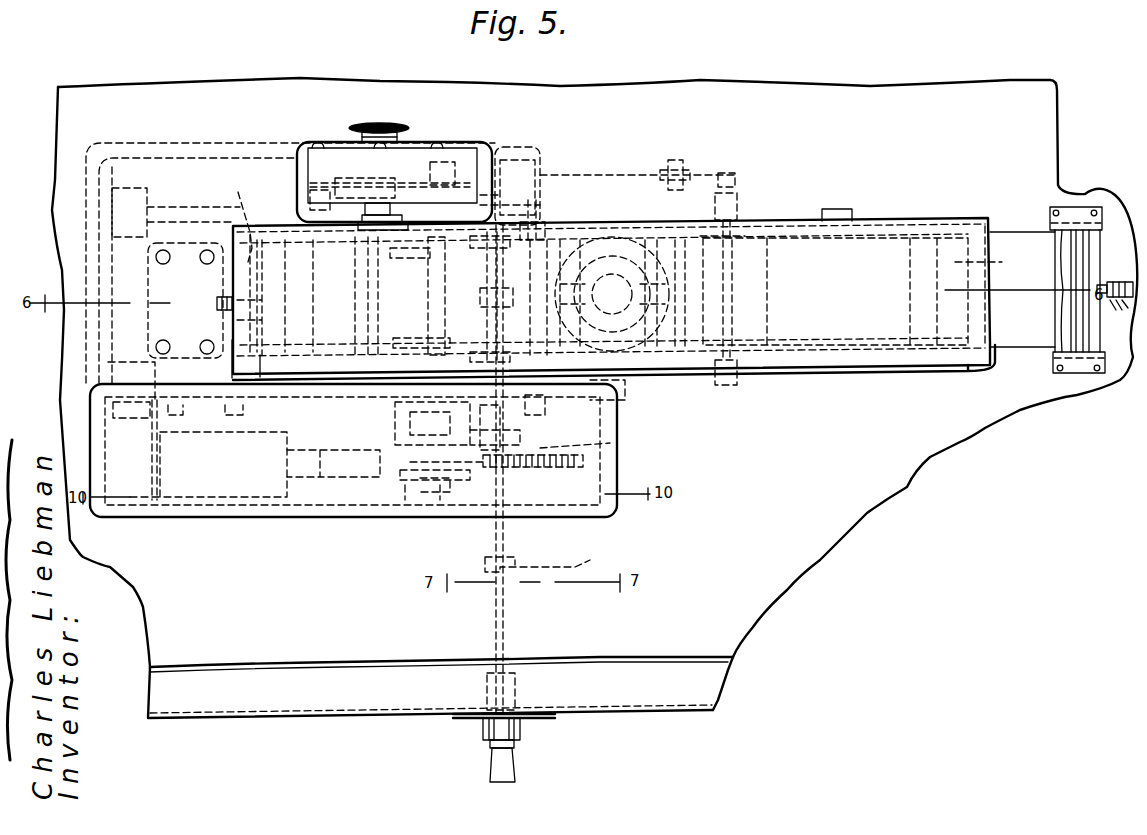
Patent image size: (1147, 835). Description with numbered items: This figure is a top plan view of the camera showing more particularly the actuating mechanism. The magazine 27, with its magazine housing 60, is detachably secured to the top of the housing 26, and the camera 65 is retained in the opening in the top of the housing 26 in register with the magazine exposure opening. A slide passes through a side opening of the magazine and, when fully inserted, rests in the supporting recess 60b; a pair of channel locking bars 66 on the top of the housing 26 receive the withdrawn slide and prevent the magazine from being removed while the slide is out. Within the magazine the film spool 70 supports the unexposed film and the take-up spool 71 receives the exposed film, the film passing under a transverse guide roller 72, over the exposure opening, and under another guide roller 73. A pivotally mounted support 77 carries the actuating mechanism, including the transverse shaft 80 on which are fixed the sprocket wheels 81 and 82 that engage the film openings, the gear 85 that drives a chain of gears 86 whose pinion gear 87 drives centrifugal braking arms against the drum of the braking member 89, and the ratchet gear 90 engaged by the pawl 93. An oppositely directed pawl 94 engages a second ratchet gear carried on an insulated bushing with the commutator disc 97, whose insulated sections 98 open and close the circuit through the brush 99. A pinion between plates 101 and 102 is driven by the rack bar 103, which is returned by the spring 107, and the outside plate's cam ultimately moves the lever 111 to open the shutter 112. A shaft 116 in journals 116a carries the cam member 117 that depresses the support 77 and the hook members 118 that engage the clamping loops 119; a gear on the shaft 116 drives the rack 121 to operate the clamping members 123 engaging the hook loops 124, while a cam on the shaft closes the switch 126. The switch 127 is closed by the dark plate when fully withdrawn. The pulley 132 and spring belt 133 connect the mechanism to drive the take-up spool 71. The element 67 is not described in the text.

The housing 26 is at (885, 78).
The magazine 27 is at (912, 213).
The magazine housing 60 is at (990, 224).
The supporting recess 60b is at (216, 300).
The camera 65 is at (640, 226).
The channel locking bars 66 is at (1076, 210).
The guide rod 67 is at (1003, 244).
The film spool 70 is at (795, 240).
The take-up spool 71 is at (238, 205).
The guide roller 72 is at (991, 262).
The guide roller 73 is at (238, 308).
The support 77 is at (192, 205).
The transverse shaft 80 is at (432, 284).
The sprocket wheel 81 is at (408, 258).
The sprocket wheel 82 is at (416, 340).
The gear 85 is at (450, 168).
The chain of gears 86 is at (408, 172).
The pinion gear 87 is at (390, 176).
The braking member 89 is at (312, 186).
The ratchet gear 90 is at (395, 414).
The pawl 93 is at (422, 398).
The pawl 94 is at (502, 434).
The commutator disc 97 is at (392, 440).
The insulated sections 98 is at (502, 426).
The brush 99 is at (402, 474).
The plate 101 is at (412, 490).
The plate 102 is at (418, 508).
The rack bar 103 is at (438, 508).
The spring 107 is at (302, 441).
The lever 111 is at (600, 447).
The shutter 112 is at (628, 390).
The shaft 116 is at (492, 605).
The journals 116a is at (538, 206).
The cam member 117 is at (480, 296).
The hook members 118 is at (538, 224).
The clamping loops 119 is at (480, 242).
The rack 121 is at (618, 178).
The clamping members 123 is at (760, 228).
The hook loops 124 is at (714, 224).
The switch 126 is at (546, 560).
The switch 127 is at (1120, 282).
The pulley 132 is at (518, 150).
The spring belt 133 is at (546, 162).